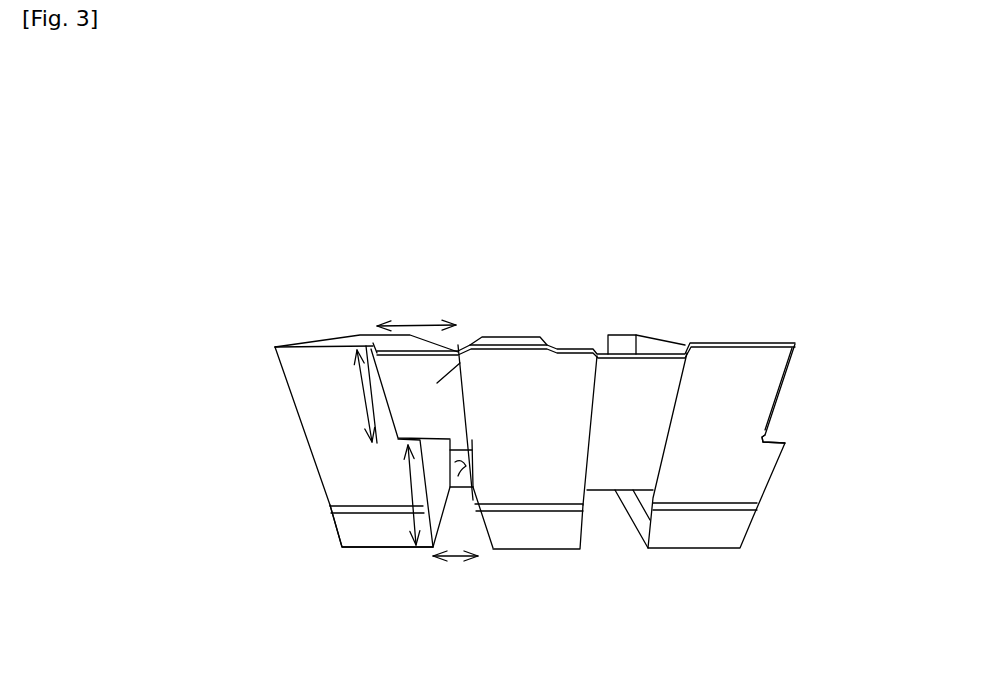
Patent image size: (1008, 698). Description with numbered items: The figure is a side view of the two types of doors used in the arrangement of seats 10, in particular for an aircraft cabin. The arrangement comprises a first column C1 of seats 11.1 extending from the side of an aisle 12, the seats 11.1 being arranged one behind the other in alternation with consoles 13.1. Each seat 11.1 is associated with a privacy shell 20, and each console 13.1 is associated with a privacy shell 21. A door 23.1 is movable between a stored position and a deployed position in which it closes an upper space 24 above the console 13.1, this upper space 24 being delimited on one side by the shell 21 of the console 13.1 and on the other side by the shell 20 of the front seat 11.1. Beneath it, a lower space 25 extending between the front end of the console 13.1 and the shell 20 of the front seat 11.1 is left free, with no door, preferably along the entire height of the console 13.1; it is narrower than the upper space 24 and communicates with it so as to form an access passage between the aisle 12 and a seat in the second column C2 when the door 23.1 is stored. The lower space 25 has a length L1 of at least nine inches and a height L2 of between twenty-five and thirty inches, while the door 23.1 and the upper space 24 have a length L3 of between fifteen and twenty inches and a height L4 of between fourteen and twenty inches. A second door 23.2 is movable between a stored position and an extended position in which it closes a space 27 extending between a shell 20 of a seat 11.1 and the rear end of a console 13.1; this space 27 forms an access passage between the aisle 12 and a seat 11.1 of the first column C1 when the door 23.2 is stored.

The arrangement of seats 10 is at (356, 168).
The privacy shell 21 is at (318, 357).
The privacy shell 20 is at (557, 365).
The door 23.1 is at (476, 343).
The second door 23.2 is at (637, 372).
The upper space 24 is at (470, 385).
The lower space 25 is at (453, 530).
The space 27 is at (668, 434).
The console 13.1 is at (333, 489).
The aisle 12 is at (365, 571).
The seat 11.1 is at (550, 484).
The first column C1 is at (283, 428).
The second column C2 is at (362, 330).
The length L1 is at (458, 561).
The height L2 is at (408, 491).
The length L3 is at (420, 312).
The height L4 is at (356, 396).